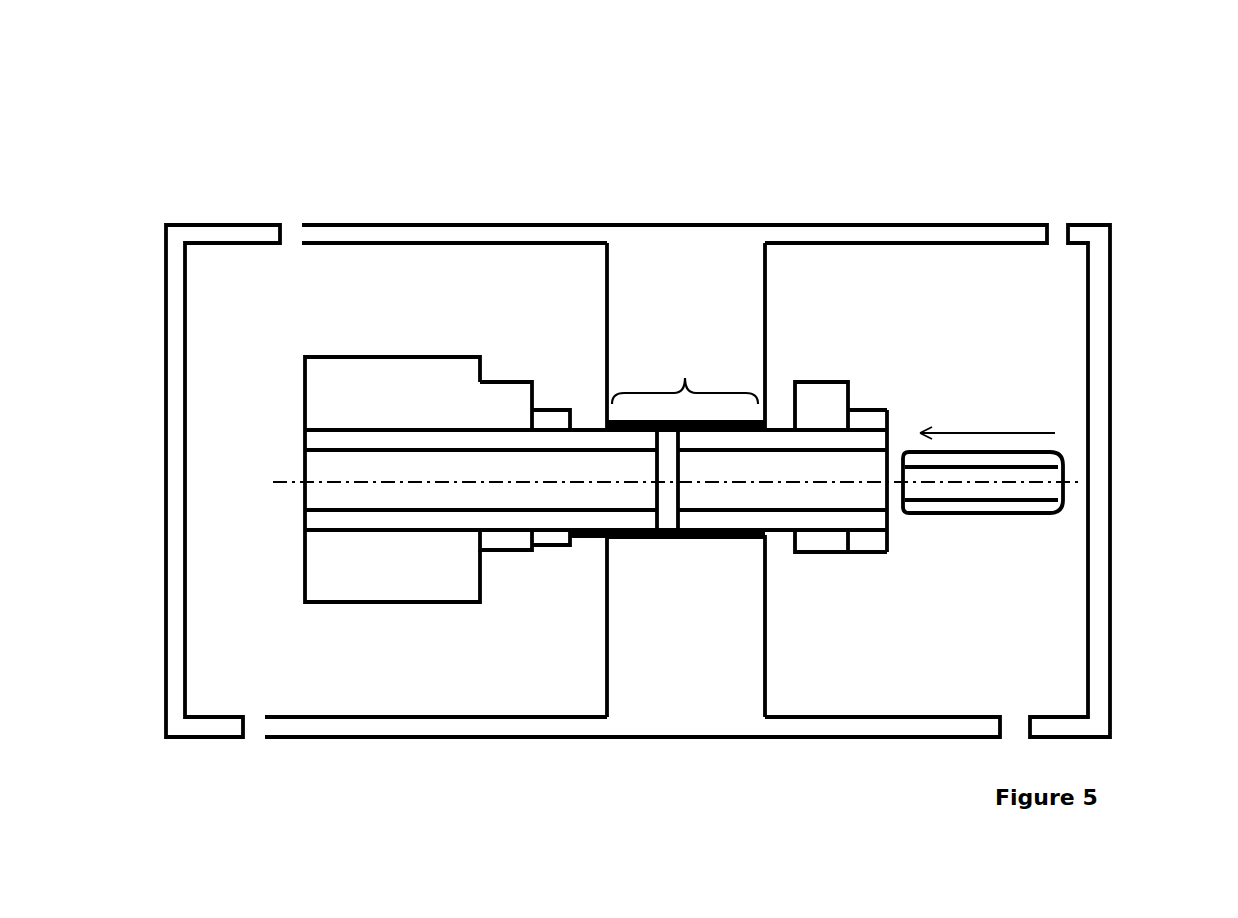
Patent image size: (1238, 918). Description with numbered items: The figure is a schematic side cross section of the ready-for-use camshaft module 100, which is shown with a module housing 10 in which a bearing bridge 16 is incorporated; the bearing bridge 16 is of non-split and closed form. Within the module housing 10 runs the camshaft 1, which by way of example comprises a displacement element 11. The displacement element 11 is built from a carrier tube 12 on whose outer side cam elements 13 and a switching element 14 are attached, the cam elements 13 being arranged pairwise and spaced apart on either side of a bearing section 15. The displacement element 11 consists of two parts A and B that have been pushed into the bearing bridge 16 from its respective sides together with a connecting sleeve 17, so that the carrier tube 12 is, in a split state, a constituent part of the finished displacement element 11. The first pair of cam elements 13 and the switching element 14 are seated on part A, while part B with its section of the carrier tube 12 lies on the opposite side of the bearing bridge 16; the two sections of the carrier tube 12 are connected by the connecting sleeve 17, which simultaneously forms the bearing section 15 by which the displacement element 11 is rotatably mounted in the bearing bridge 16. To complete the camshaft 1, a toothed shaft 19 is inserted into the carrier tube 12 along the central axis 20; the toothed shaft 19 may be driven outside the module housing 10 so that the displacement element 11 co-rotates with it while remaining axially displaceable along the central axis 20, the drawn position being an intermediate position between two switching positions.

The camshaft 1 is at (992, 345).
The module housing 10 is at (250, 232).
The displacement element 11 is at (475, 628).
The carrier tube 12 is at (510, 518).
The cam elements 13 is at (553, 410).
The switching element 14 is at (382, 585).
The bearing section 15 is at (685, 434).
The bearing bridge 16 is at (750, 295).
The connecting sleeve 17 is at (590, 538).
The toothed shaft 19 is at (1010, 515).
The central axis 20 is at (273, 482).
The camshaft module 100 is at (1128, 173).
The part A of the displacement element A is at (394, 334).
The part B of the displacement element B is at (900, 390).